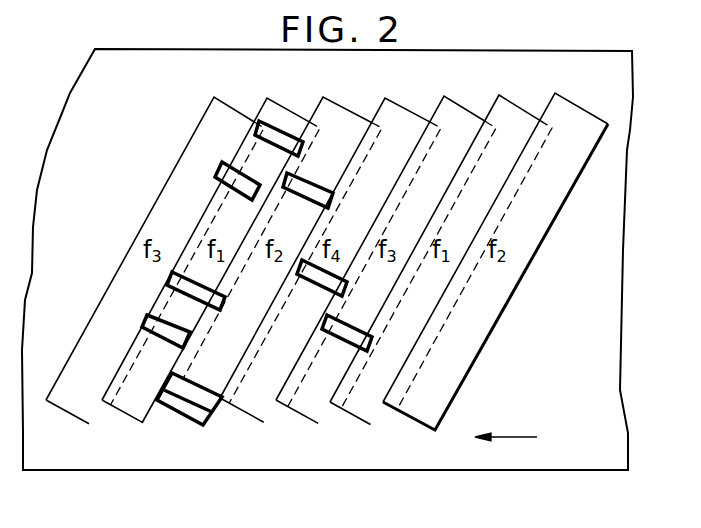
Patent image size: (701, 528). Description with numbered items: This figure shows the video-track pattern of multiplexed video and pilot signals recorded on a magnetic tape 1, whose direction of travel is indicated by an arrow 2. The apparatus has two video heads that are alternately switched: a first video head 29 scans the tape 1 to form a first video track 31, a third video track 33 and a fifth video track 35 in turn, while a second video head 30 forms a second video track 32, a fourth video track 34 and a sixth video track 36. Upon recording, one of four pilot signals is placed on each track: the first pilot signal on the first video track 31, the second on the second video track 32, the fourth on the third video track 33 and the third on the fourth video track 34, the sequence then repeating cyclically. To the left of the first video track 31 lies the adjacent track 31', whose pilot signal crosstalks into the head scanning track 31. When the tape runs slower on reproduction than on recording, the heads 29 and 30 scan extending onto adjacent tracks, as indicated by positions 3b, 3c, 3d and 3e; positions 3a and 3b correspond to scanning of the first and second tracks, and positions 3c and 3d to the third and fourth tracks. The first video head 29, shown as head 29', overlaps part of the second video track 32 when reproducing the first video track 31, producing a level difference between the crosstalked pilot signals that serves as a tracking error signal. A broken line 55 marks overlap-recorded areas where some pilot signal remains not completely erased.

The magnetic tape 1 is at (219, 470).
The arrow 2 is at (506, 424).
The scanning position 3a is at (220, 170).
The scanning position 3b is at (276, 145).
The scanning position 3c is at (307, 198).
The scanning position 3d is at (320, 277).
The scanning position 3e is at (343, 337).
The first video head 29 is at (139, 335).
The first video head 29' is at (170, 291).
The second video head 30 is at (213, 400).
The adjacent track 31' is at (150, 282).
The first video track 31 is at (208, 283).
The second video track 32 is at (178, 413).
The third video track 33 is at (250, 420).
The fourth video track 34 is at (298, 417).
The fifth video track 35 is at (353, 417).
The sixth video track 36 is at (410, 422).
The broken line 55 is at (523, 183).